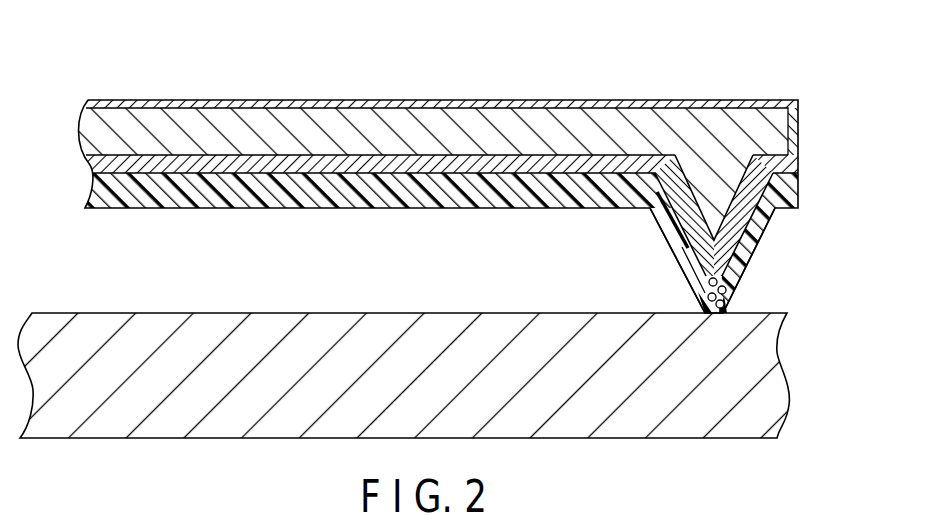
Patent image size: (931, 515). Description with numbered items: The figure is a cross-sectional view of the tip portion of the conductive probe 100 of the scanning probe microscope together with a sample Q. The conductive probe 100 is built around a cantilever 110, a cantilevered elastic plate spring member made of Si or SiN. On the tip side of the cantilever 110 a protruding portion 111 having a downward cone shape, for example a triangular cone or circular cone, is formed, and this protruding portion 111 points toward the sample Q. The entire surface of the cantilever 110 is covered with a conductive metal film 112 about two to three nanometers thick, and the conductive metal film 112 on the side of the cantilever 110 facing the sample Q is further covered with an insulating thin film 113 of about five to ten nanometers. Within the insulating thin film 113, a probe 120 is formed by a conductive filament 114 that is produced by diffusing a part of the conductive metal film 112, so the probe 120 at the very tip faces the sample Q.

The conductive probe 100 is at (567, 101).
The cantilever 110 is at (288, 101).
The protruding portion 111 is at (713, 212).
The conductive metal film 112 is at (692, 227).
The insulating thin film 113 is at (693, 273).
The conductive filament 114 is at (720, 287).
The probe 120 is at (755, 255).
The sample Q is at (760, 362).